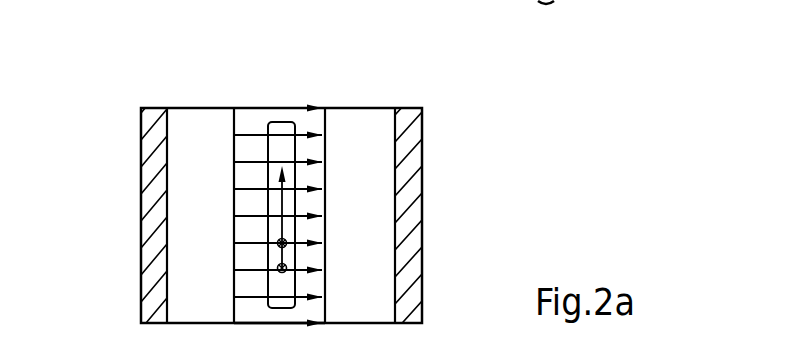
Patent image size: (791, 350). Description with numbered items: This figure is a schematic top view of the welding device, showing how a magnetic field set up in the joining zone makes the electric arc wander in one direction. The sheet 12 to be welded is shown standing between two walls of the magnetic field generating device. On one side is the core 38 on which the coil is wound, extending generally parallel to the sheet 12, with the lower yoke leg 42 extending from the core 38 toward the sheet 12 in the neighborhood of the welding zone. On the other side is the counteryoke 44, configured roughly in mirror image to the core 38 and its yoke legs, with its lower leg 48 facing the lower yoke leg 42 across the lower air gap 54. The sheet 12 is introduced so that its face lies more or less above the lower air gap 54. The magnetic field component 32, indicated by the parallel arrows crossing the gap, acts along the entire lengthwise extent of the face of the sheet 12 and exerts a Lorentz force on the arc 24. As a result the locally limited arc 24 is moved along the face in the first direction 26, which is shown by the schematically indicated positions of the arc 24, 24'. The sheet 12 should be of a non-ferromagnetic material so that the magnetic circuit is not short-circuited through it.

The sheet 12 is at (282, 128).
The arc 24 is at (407, 260).
The arc 24' is at (405, 216).
The first direction 26 is at (285, 203).
The magnetic field component 32 is at (251, 135).
The core 38 is at (430, 138).
The lower yoke leg 42 is at (352, 135).
The counteryoke 44 is at (134, 169).
The lower leg 48 is at (190, 128).
The lower air gap 54 is at (252, 316).